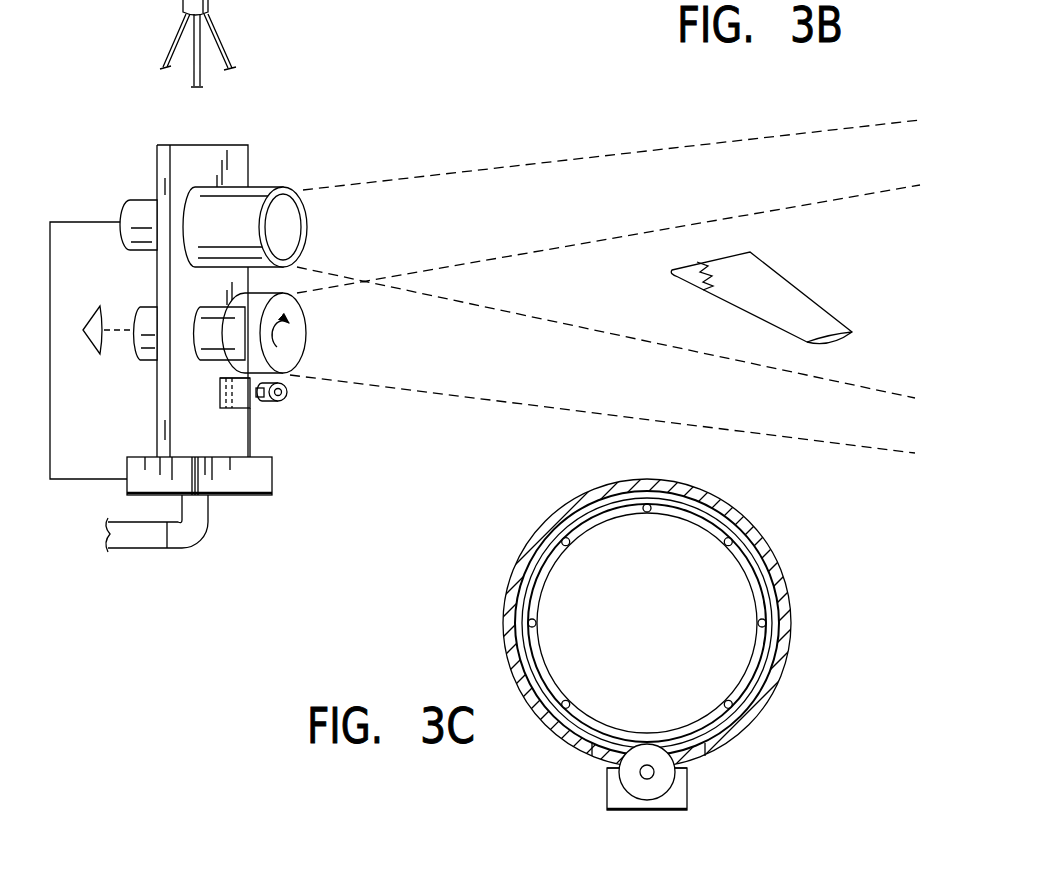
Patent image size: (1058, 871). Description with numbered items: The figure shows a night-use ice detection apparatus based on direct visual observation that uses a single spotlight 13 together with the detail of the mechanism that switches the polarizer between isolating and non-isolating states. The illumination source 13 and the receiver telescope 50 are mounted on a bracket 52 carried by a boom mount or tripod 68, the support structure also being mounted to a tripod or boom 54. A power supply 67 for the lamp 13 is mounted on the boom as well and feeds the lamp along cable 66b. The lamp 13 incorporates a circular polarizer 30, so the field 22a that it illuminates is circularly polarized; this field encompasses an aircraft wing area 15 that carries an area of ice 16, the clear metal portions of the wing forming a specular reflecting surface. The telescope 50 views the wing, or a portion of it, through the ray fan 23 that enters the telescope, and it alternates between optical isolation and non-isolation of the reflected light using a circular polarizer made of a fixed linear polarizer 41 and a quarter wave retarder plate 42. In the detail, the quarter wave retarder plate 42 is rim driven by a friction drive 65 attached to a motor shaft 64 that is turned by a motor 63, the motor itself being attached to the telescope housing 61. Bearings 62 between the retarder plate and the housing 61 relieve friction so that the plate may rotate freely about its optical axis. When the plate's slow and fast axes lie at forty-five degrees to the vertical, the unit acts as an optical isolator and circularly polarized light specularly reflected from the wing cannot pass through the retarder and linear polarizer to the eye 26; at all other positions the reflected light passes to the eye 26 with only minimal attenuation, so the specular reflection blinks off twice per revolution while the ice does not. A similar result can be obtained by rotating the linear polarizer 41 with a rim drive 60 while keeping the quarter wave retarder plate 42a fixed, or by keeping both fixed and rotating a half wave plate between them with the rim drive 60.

In FIG. 3B, the spotlight 13 is at (128, 214).
In FIG. 3B, the aircraft wing 15 is at (827, 322).
In FIG. 3B, the patch of ice 16 is at (683, 268).
In FIG. 3B, the illuminated field 22a is at (415, 177).
In FIG. 3B, the ray fan 23 is at (603, 415).
In FIG. 3B, the eye 26 is at (88, 352).
In FIG. 3B, the circular polarizer 30 is at (284, 200).
In FIG. 3B, the fixed linear polarizer 41 is at (232, 366).
In FIG. 3B, the quarter wave retarder plate 42 is at (290, 295).
In FIG. 3C, the quarter wave retarder plate 42a is at (668, 626).
In FIG. 3B, the telescope 50 is at (207, 312).
In FIG. 3B, the bracket 52 is at (153, 168).
In FIG. 3B, the tripod or boom 54 is at (214, 4).
In FIG. 3B, the rim drive 60 is at (230, 410).
In FIG. 3C, the rim drive 60 is at (604, 783).
In FIG. 3C, the telescope housing 61 is at (770, 567).
In FIG. 3C, the bearings 62 is at (565, 555).
In FIG. 3B, the motor 63 is at (250, 410).
In FIG. 3C, the motor 63 is at (680, 800).
In FIG. 3B, the motor shaft 64 is at (262, 400).
In FIG. 3C, the motor shaft 64 is at (645, 775).
In FIG. 3B, the friction drive 65 is at (288, 390).
In FIG. 3C, the friction drive 65 is at (670, 778).
In FIG. 3B, the cable 66b is at (53, 233).
In FIG. 3B, the power supply 67 is at (278, 478).
In FIG. 3B, the boom mount or tripod 68 is at (185, 538).